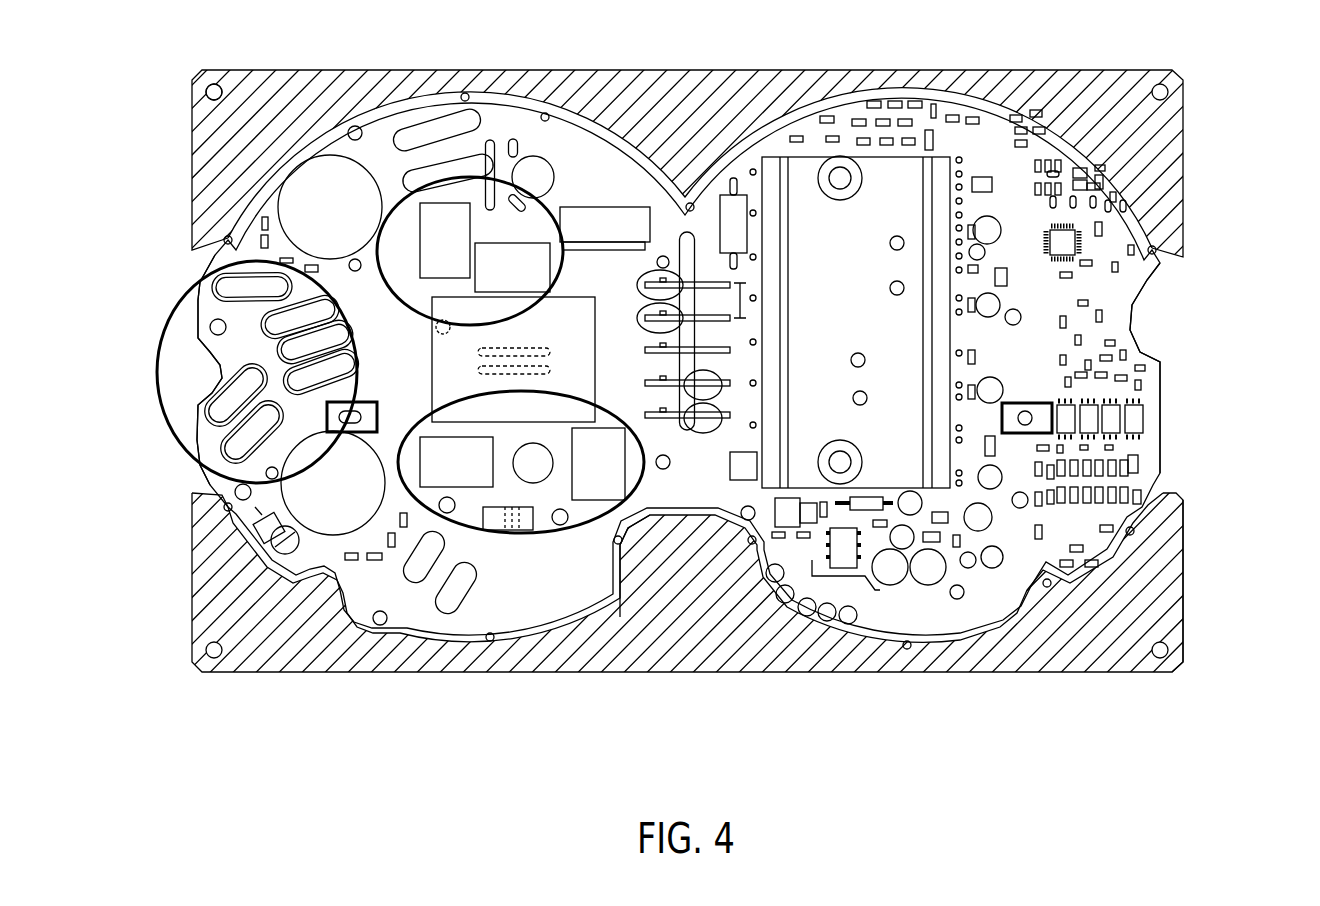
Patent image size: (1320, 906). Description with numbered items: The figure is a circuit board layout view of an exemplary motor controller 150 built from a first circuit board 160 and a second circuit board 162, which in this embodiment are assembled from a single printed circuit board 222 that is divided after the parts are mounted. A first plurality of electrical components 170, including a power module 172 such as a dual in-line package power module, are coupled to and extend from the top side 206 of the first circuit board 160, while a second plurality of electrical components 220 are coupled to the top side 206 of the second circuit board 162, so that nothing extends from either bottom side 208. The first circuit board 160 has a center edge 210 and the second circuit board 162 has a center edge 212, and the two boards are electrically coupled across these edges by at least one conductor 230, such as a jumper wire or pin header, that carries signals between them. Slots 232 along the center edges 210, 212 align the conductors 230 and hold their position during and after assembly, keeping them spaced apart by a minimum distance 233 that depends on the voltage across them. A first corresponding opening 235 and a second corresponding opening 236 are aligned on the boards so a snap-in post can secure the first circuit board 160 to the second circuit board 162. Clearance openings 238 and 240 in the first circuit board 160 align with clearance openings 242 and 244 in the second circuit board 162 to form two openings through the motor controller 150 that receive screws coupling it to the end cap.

The motor controller 150 is at (660, 355).
The first circuit board 160 is at (677, 414).
The second circuit board 162 is at (317, 620).
The first plurality of electrical components 170 is at (1112, 232).
The power module 172 is at (737, 147).
The top side 206 is at (675, 367).
The bottom side 208 is at (676, 372).
The center edge 210 is at (706, 495).
The center edge 212 is at (685, 506).
The second plurality of electrical components 220 is at (379, 174).
The single printed circuit board 222 is at (1224, 586).
The conductor 230 is at (632, 380).
The slots 232 is at (701, 380).
The minimum distance 233 is at (844, 167).
The first corresponding opening 235 is at (1014, 572).
The second corresponding opening 236 is at (240, 451).
The clearance opening 238 is at (856, 257).
The clearance opening 240 is at (868, 443).
The clearance opening 242 is at (545, 104).
The clearance opening 244 is at (521, 562).